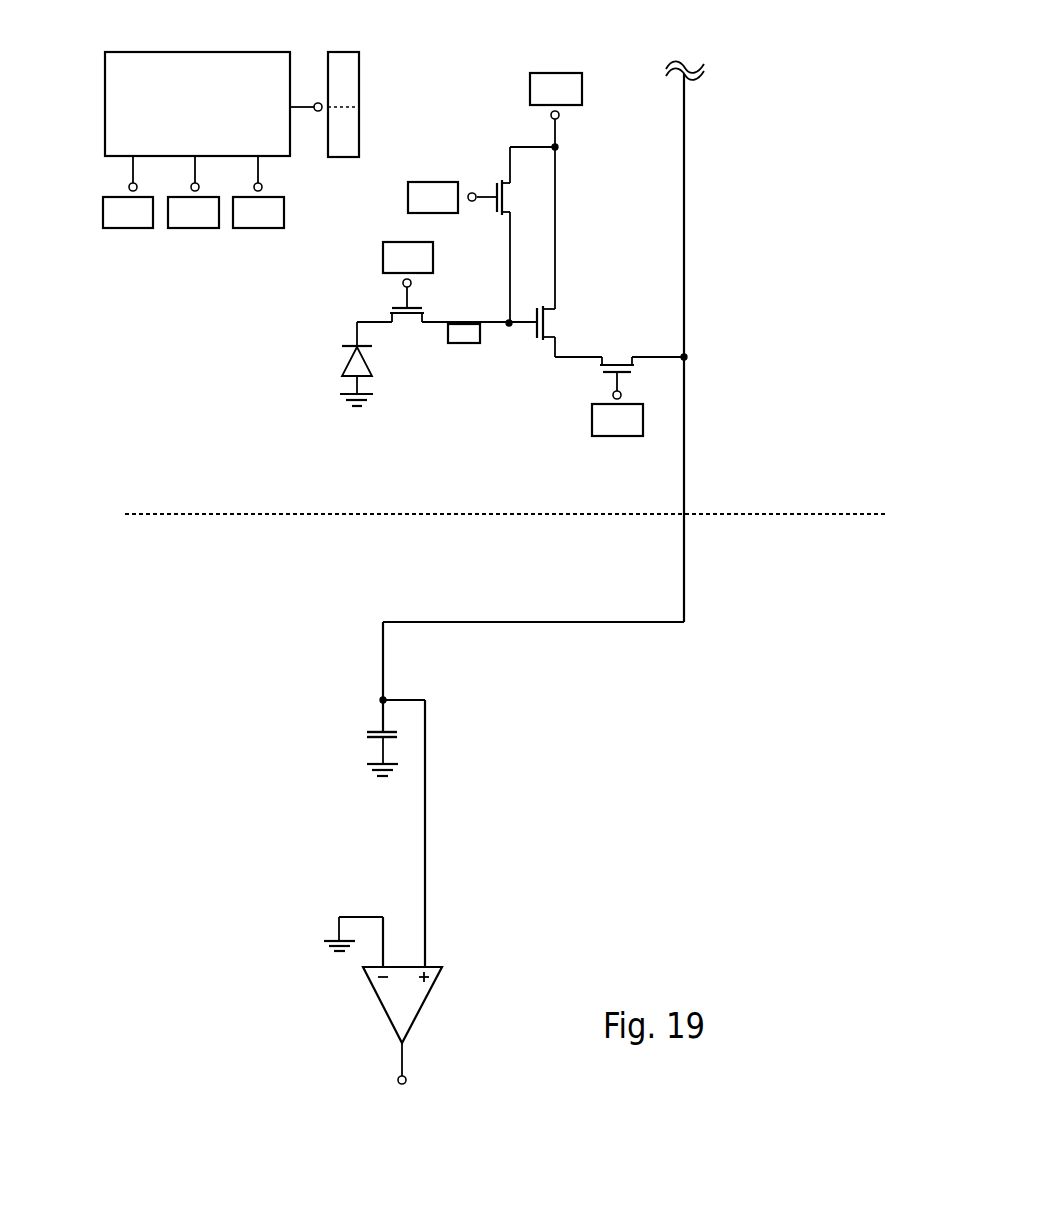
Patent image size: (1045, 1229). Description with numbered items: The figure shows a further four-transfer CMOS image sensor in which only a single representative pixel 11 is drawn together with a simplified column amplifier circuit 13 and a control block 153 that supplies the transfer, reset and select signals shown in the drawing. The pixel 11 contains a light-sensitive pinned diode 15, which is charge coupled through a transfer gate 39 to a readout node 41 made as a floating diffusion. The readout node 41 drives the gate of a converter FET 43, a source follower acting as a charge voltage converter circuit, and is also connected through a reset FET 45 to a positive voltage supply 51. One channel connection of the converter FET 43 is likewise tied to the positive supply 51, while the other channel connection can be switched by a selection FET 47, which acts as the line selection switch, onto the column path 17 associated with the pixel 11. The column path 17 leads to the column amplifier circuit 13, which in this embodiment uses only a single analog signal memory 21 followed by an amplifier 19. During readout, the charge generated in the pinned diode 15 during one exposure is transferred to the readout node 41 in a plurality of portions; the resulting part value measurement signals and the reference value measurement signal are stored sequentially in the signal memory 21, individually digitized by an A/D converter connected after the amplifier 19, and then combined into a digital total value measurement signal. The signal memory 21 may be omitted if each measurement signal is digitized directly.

The control circuit 153 is at (188, 73).
The positive voltage supply 51 is at (572, 73).
The reset FET 45 is at (490, 175).
The column path 17 is at (687, 167).
The pixel 11 is at (302, 319).
The transfer gate 39 is at (397, 303).
The readout node 41 is at (470, 322).
The converter FET 43 is at (556, 314).
The selection FET 47 is at (619, 348).
The pinned diode 15 is at (342, 360).
The analog signal memory 21 is at (367, 733).
The column amplifier circuit 13 is at (232, 925).
The amplifier 19 is at (426, 998).